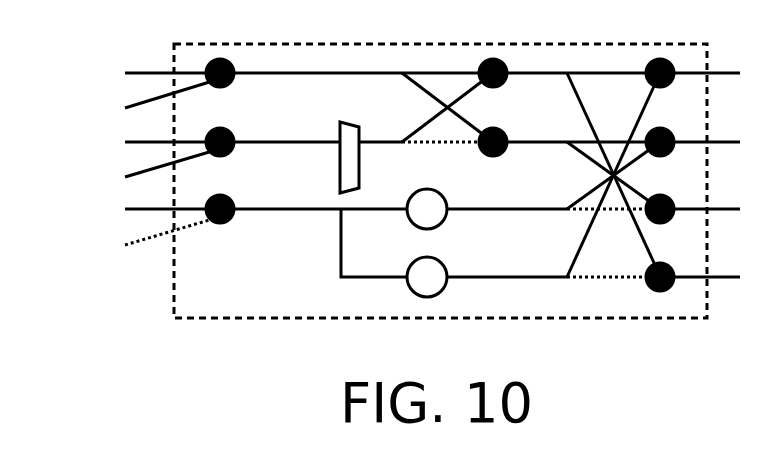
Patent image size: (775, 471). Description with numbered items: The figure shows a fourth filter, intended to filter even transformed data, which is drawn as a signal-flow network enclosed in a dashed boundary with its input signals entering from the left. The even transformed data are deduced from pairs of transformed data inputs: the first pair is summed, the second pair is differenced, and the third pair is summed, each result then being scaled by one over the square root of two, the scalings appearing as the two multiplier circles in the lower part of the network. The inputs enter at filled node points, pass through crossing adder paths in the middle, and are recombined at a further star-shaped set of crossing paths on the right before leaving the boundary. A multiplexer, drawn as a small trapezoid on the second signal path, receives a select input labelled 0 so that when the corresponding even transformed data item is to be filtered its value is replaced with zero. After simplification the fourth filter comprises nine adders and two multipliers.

The zero value 0 is at (340, 176).